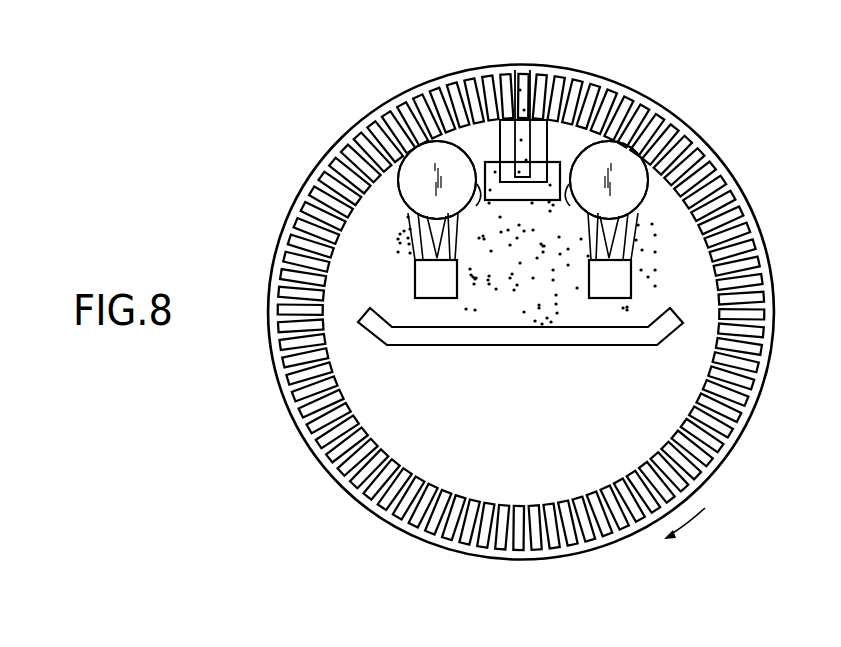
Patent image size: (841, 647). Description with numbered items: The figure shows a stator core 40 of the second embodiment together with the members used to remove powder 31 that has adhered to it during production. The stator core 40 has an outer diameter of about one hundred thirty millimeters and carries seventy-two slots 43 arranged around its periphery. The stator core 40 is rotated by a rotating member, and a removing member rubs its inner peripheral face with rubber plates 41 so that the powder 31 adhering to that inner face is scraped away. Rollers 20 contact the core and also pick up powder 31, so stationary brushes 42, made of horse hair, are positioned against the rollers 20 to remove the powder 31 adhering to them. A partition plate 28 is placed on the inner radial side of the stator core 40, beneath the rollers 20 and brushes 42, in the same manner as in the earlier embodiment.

The rollers 20 is at (422, 162).
The partition plate 28 is at (358, 322).
The powder 31 is at (485, 148).
The stator core 40 is at (600, 78).
The rubber plates 41 is at (508, 127).
The stationary brushes 42 is at (410, 226).
The slots 43 is at (512, 520).